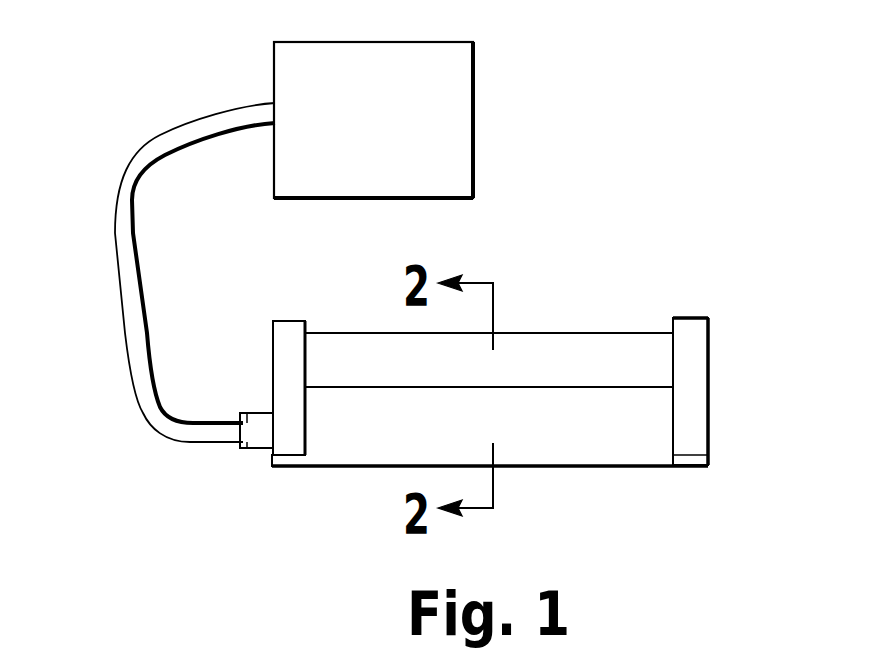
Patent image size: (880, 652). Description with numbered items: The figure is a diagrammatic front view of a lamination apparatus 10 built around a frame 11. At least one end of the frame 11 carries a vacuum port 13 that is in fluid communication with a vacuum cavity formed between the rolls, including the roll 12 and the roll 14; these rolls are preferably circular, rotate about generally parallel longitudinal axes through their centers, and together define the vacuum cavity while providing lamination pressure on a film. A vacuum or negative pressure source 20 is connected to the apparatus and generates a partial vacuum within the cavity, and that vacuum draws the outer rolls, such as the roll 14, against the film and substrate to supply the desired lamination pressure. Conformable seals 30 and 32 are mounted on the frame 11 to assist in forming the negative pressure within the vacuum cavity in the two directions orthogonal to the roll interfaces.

The lamination apparatus 10 is at (490, 331).
The frame 11 is at (283, 348).
The roll 12 is at (338, 350).
The vacuum port 13 is at (253, 440).
The roll 14 is at (575, 407).
The vacuum or negative pressure source 20 is at (97, 67).
The conformable seal 30 is at (287, 463).
The conformable seal 32 is at (690, 465).